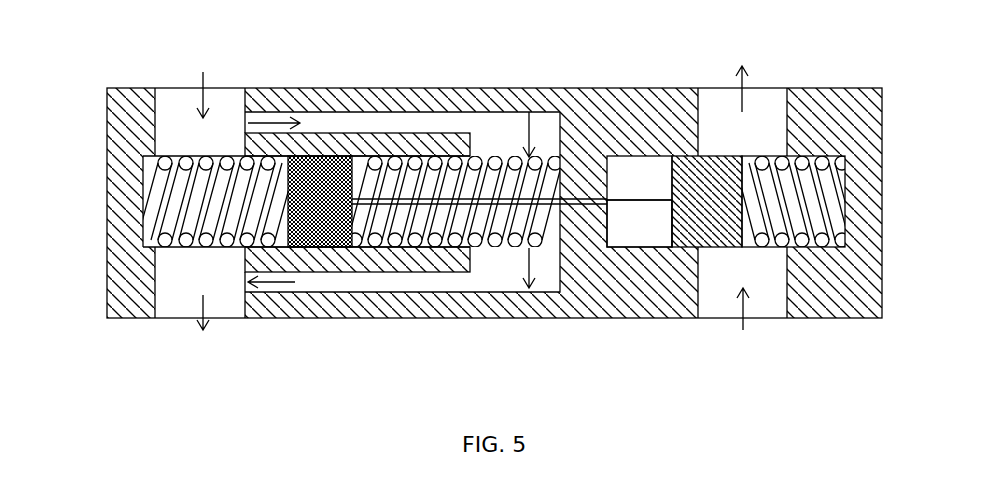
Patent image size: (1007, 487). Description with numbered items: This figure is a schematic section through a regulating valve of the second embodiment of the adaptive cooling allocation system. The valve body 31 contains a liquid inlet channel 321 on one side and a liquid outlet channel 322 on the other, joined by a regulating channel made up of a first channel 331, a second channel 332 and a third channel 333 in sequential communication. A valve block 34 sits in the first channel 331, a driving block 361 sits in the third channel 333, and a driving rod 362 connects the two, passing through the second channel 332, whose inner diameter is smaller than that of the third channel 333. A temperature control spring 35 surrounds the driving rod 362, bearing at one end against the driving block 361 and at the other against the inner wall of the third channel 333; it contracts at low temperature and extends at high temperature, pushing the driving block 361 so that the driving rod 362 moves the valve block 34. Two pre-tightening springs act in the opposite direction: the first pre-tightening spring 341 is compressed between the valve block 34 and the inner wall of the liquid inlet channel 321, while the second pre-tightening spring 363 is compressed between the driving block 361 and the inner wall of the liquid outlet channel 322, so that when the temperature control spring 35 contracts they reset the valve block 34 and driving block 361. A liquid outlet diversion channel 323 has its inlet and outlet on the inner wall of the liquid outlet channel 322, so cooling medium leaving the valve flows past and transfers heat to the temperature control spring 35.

The valve body 31 is at (110, 122).
The liquid inlet channel 321 is at (698, 117).
The liquid outlet channel 322 is at (155, 122).
The liquid outlet diversion channel 323 is at (400, 88).
The first channel 331 is at (652, 157).
The second channel 332 is at (590, 197).
The third channel 333 is at (390, 247).
The valve block 34 is at (712, 248).
The first pre-tightening spring 341 is at (845, 190).
The temperature control spring 35 is at (497, 240).
The driving block 361 is at (315, 245).
The driving rod 362 is at (631, 200).
The second pre-tightening spring 363 is at (153, 203).